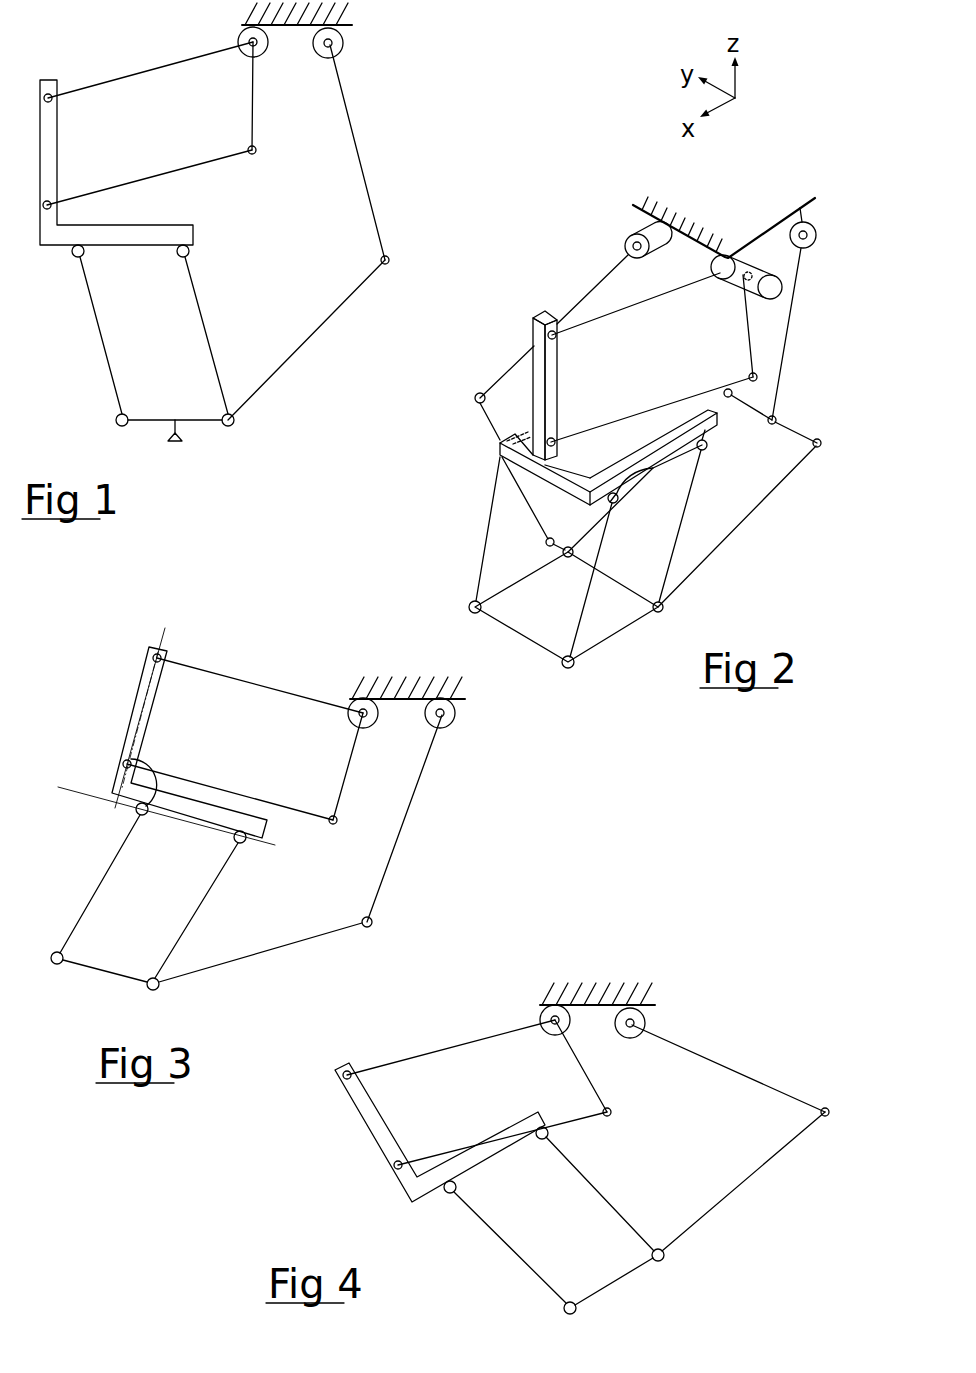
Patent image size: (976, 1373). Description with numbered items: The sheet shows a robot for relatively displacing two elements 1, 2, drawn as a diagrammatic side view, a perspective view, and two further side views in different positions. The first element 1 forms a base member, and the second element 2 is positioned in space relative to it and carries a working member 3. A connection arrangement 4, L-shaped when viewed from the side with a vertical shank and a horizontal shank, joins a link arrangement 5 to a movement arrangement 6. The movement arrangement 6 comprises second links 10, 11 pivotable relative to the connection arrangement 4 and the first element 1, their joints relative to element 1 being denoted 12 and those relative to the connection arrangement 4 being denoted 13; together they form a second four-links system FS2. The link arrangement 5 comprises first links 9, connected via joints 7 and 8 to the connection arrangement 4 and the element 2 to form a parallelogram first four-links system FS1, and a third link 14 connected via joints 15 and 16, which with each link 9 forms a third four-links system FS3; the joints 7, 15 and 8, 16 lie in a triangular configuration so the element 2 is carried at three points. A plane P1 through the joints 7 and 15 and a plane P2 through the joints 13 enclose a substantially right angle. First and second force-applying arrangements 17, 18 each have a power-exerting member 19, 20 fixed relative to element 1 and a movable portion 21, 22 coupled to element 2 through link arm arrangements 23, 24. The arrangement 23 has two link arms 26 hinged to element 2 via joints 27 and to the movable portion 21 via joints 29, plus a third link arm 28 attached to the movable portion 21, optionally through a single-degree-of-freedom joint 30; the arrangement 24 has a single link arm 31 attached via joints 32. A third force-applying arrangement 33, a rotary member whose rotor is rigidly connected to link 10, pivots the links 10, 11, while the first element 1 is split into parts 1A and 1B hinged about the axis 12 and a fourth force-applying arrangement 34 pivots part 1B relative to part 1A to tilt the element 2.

In FIG. 1, the first element 1 is at (340, 8).
In FIG. 2, the first part of first element 1A is at (745, 250).
In FIG. 2, the second part of first element 1B is at (748, 330).
In FIG. 2, the second element 2 is at (621, 631).
In FIG. 3, the second element 2 is at (98, 974).
In FIG. 4, the second element 2 is at (620, 1283).
In FIG. 1, the working member 3 is at (180, 442).
In FIG. 1, the connection arrangement 4 is at (46, 250).
In FIG. 2, the connection arrangement 4 is at (632, 466).
In FIG. 1, the link arrangement 5 is at (96, 361).
In FIG. 2, the link arrangement 5 is at (470, 528).
In FIG. 1, the movement arrangement 6 is at (106, 73).
In FIG. 2, the movement arrangement 6 is at (647, 352).
In FIG. 2, the joint 7 is at (690, 466).
In FIG. 2, the joint 8 is at (571, 669).
In FIG. 2, the first link 9 is at (598, 556).
In FIG. 1, the second link 10 is at (148, 70).
In FIG. 2, the second link 10 is at (666, 293).
In FIG. 1, the second link 11 is at (193, 172).
In FIG. 2, the second link 11 is at (665, 405).
In FIG. 1, the joint 12 is at (262, 54).
In FIG. 1, the joint 13 is at (52, 102).
In FIG. 2, the joint 13 is at (551, 388).
In FIG. 2, the third link 14 is at (503, 500).
In FIG. 2, the joint 15 is at (498, 441).
In FIG. 2, the joint 16 is at (468, 607).
In FIG. 2, the first force-applying arrangement 17 is at (792, 374).
In FIG. 2, the second force-applying arrangement 18 is at (488, 374).
In FIG. 2, the power-exerting member 19 is at (800, 222).
In FIG. 2, the power-exerting member 20 is at (638, 230).
In FIG. 2, the movable portion 21 is at (794, 292).
In FIG. 2, the movable portion 22 is at (520, 362).
In FIG. 2, the link arm arrangement 23 is at (775, 494).
In FIG. 2, the link arm arrangement 24 is at (455, 402).
In FIG. 2, the link arm 26 is at (630, 488).
In FIG. 2, the joint 27 is at (568, 558).
In FIG. 2, the third link arm 28 is at (735, 395).
In FIG. 2, the joint 29 is at (732, 396).
In FIG. 2, the joint 30 is at (778, 420).
In FIG. 2, the link arm 31 is at (488, 421).
In FIG. 2, the joint 32 is at (476, 394).
In FIG. 1, the third force-applying arrangement 33 is at (243, 36).
In FIG. 2, the third force-applying arrangement 33 is at (723, 262).
In FIG. 2, the fourth force-applying arrangement 34 is at (756, 275).
In FIG. 2, the first four-links system FS1 is at (695, 506).
In FIG. 2, the second four-links system FS2 is at (622, 283).
In FIG. 2, the third four-links system FS3 is at (433, 553).
In FIG. 3, the plane P1 is at (72, 790).
In FIG. 3, the plane P2 is at (158, 634).